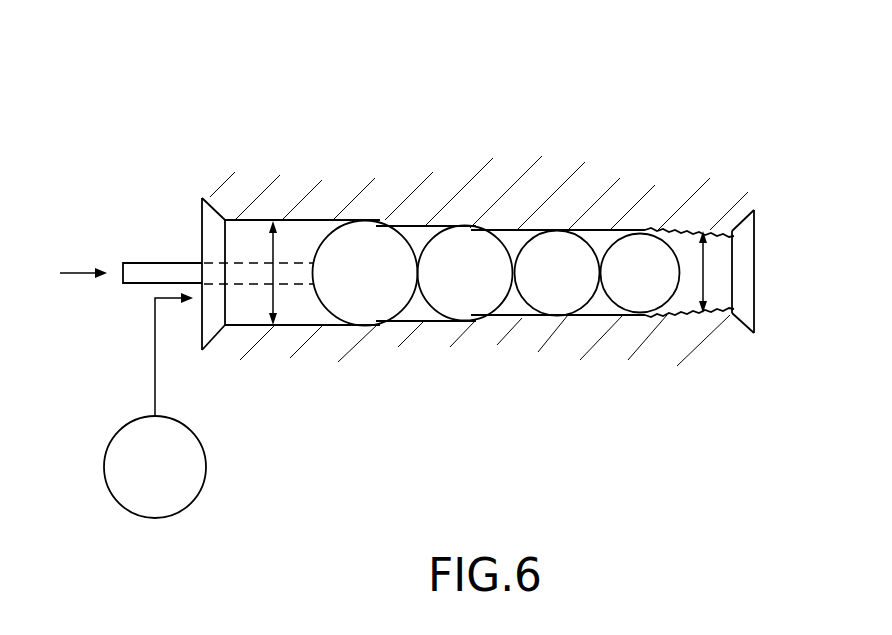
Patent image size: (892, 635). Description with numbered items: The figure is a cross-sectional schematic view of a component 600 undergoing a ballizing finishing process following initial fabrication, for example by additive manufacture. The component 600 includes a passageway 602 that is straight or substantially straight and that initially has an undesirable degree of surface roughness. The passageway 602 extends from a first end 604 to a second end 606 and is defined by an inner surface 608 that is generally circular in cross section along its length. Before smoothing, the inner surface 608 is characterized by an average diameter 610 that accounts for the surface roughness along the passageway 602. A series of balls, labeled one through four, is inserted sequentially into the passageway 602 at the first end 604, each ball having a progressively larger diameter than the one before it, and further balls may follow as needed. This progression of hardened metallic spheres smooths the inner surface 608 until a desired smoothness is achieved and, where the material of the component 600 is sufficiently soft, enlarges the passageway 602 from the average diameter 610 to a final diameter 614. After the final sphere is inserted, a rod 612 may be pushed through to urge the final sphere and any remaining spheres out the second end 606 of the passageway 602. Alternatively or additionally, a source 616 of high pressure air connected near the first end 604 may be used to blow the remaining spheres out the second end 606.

The component 600 is at (299, 93).
The passageway 602 is at (300, 326).
The first end 604 is at (213, 208).
The second end 606 is at (741, 219).
The inner surface 608 is at (508, 229).
The average diameter 610 is at (703, 274).
The rod 612 is at (152, 262).
The final diameter 614 is at (275, 252).
The source of high pressure air 616 is at (179, 510).